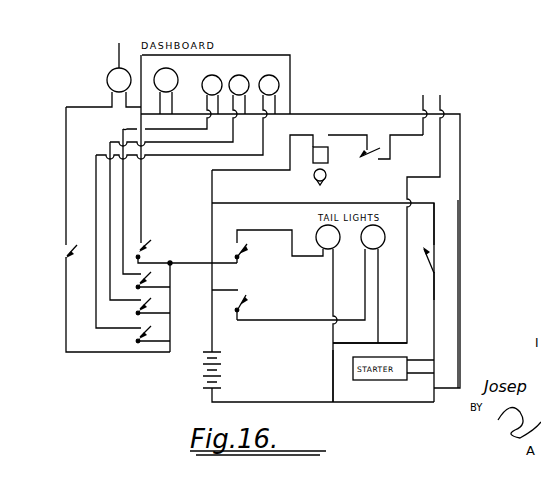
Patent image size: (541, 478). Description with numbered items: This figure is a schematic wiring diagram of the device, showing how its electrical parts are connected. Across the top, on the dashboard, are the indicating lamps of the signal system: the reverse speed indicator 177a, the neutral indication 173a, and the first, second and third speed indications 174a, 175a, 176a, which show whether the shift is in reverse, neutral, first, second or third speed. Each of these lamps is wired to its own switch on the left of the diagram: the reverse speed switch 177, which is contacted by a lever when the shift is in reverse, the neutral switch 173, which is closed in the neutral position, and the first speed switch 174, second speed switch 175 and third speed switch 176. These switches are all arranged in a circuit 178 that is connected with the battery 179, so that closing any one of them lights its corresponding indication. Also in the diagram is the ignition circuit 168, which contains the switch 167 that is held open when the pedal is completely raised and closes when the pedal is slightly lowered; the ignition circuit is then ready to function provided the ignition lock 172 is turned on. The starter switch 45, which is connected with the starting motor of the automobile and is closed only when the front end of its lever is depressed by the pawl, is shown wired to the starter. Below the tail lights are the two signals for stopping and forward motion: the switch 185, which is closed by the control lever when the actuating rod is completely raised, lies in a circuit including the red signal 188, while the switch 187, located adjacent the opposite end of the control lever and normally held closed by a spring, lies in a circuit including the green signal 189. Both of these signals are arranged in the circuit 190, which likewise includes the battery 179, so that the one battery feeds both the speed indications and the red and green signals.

The starter switch 45 is at (422, 251).
The switch 167 is at (358, 160).
The ignition circuit 168 is at (400, 139).
The ignition lock 172 is at (313, 165).
The neutral switch 173 is at (143, 247).
The first speed switch 174 is at (150, 276).
The second speed switch 175 is at (150, 303).
The third speed switch 176 is at (150, 331).
The reverse speed switch 177 is at (63, 260).
The neutral indication 173a is at (176, 72).
The first speed indication 174a is at (220, 78).
The second speed indication 175a is at (250, 79).
The third speed indication 176a is at (279, 83).
The reverse speed indicator 177a is at (107, 80).
The circuit 178 is at (458, 333).
The battery 179 is at (219, 371).
The switch 185 is at (243, 244).
The switch 187 is at (247, 300).
The red signal 188 is at (318, 233).
The green signal 189 is at (364, 247).
The circuit 190 is at (333, 350).